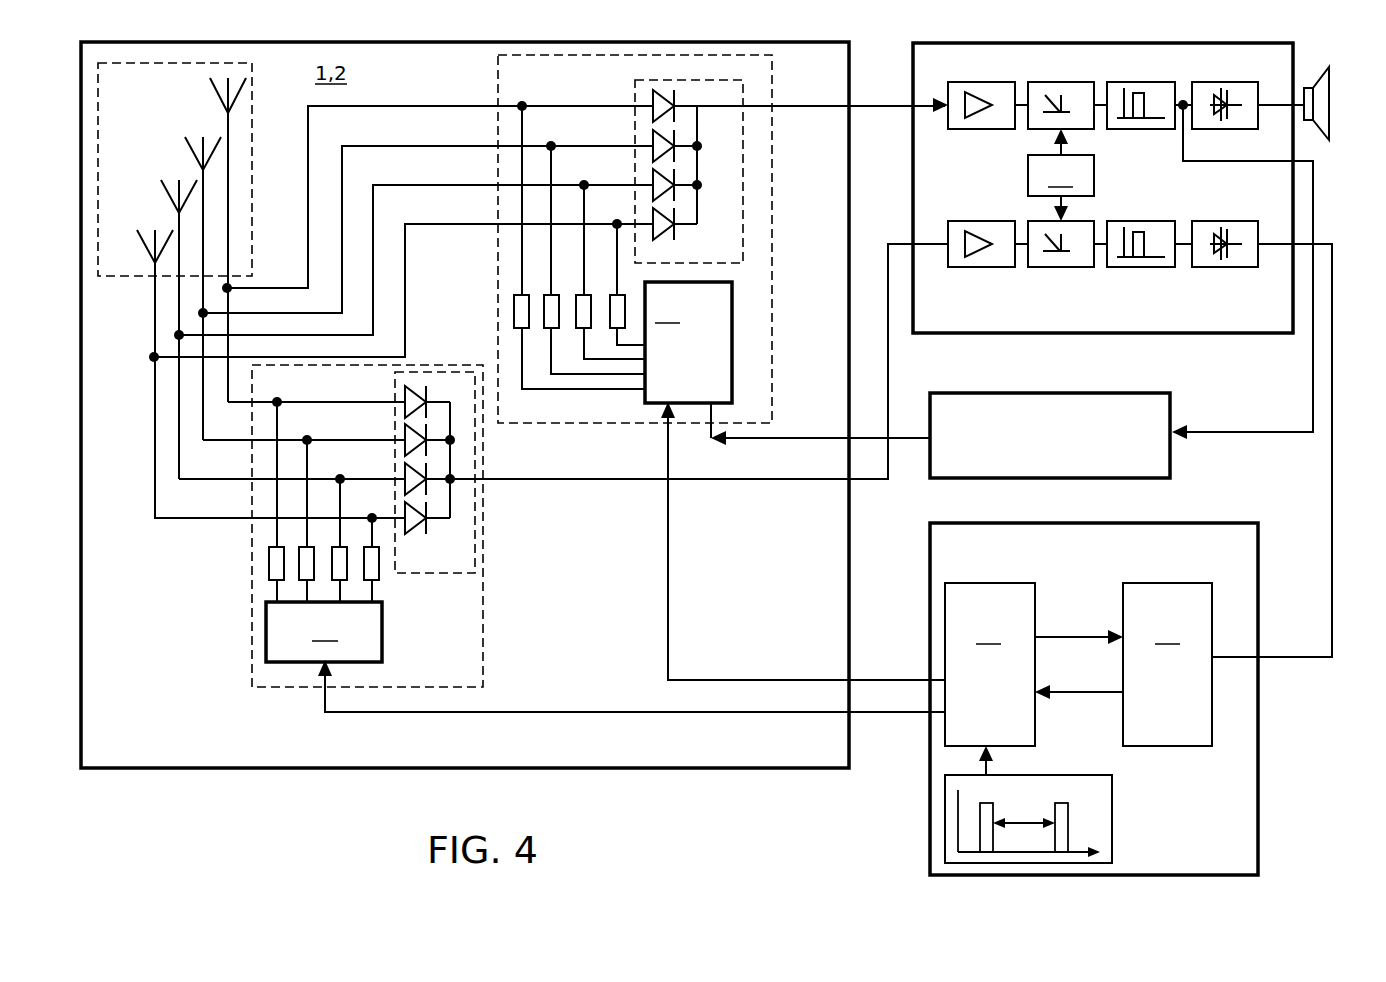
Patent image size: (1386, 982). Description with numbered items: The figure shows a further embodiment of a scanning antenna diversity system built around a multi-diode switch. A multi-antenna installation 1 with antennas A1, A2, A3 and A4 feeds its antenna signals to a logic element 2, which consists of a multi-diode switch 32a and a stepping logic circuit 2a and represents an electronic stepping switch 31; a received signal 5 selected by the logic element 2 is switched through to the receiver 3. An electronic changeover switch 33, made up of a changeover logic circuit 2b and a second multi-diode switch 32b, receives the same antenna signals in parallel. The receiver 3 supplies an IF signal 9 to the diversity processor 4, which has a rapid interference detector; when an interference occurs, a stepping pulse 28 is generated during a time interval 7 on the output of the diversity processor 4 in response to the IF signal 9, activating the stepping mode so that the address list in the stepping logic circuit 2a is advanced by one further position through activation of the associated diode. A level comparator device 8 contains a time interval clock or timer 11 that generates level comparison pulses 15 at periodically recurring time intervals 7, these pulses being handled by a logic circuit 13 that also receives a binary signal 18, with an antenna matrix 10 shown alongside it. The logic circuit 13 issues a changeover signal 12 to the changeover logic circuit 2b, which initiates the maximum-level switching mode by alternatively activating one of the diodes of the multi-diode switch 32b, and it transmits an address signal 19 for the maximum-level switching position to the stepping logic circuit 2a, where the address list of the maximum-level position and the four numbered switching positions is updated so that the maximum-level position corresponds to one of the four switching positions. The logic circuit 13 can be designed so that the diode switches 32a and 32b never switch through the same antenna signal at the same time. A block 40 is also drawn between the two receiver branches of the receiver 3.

The multi-antenna installation 1 is at (123, 95).
The antenna A1 is at (146, 245).
The antenna A2 is at (171, 192).
The antenna A3 is at (194, 143).
The antenna A4 is at (219, 100).
The logic element 2 is at (597, 58).
The stepping logic circuit 2a is at (688, 342).
The changeover logic circuit 2b is at (324, 632).
The receiver 3 is at (915, 158).
The diversity processor 4 is at (1045, 393).
The received signal 5 is at (890, 107).
The time interval 7 is at (1028, 823).
The level comparator device 8 is at (1118, 523).
The IF signal 9 is at (1313, 190).
The antenna matrix 10 is at (1167, 664).
The time interval clock or timer 11 is at (1106, 802).
The changeover signal 12 is at (574, 712).
The logic circuit 13 is at (990, 664).
The level comparison pulses 15 is at (1080, 636).
The binary signal 18 is at (1075, 694).
The address signal 19 is at (668, 540).
The stepping pulse 28 is at (800, 437).
The electronic stepping switch 31 is at (767, 351).
The multi-diode switch 32a is at (735, 255).
The multi-diode switch 32b is at (470, 565).
The electronic changeover switch 33 is at (450, 643).
The local oscillator 40 is at (1061, 175).